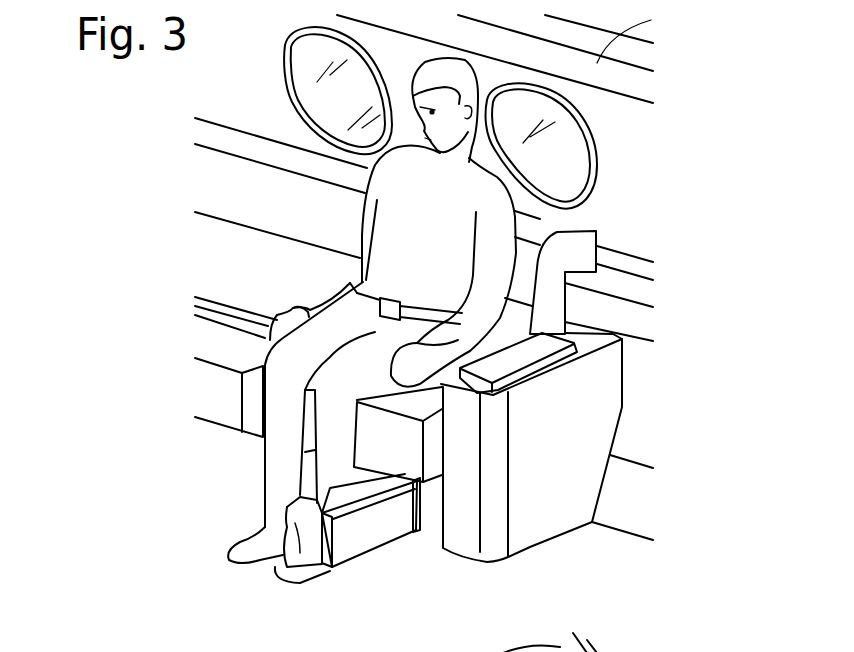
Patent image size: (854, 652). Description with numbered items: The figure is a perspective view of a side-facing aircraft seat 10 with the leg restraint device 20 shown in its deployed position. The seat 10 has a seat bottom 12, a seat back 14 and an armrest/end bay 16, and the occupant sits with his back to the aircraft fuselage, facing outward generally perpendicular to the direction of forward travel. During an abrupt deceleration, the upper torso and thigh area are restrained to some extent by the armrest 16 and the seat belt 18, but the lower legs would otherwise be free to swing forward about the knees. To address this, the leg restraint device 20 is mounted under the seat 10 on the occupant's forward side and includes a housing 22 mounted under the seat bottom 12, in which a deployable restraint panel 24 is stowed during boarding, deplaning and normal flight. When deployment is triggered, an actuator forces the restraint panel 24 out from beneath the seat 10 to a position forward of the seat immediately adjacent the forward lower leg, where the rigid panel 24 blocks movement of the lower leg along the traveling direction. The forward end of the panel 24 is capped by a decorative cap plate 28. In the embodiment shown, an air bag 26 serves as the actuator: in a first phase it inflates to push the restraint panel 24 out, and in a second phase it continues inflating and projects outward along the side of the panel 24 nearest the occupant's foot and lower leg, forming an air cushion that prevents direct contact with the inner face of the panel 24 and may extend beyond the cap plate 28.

The seat 10 is at (606, 198).
The seat bottom 12 is at (253, 397).
The seat back 14 is at (552, 295).
The armrest/end bay 16 is at (592, 385).
The seat belt 18 is at (367, 300).
The leg restraint device 20 is at (408, 558).
The housing 22 is at (432, 503).
The restraint panel 24 is at (373, 528).
The air bag 26 is at (297, 497).
The cap plate 28 is at (327, 568).